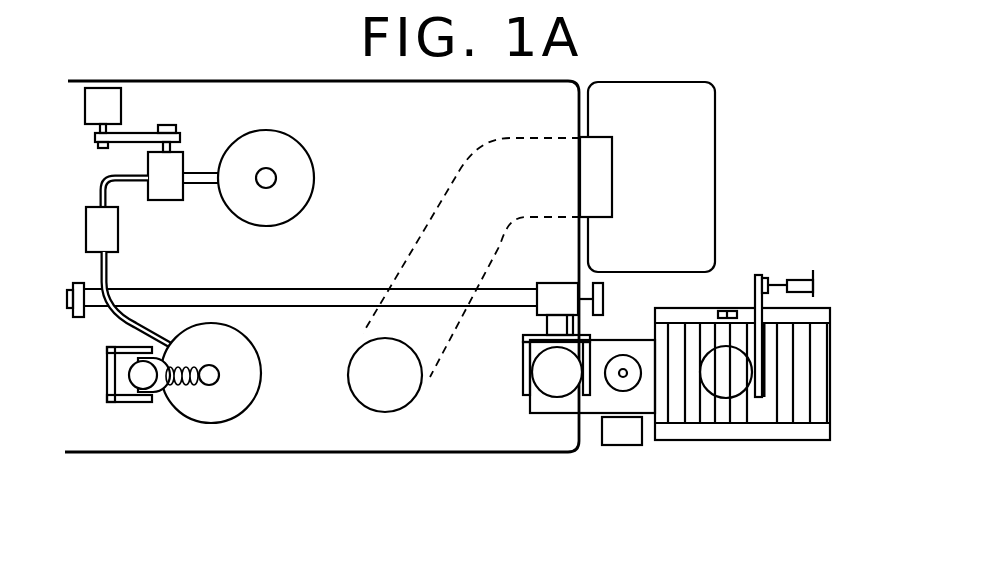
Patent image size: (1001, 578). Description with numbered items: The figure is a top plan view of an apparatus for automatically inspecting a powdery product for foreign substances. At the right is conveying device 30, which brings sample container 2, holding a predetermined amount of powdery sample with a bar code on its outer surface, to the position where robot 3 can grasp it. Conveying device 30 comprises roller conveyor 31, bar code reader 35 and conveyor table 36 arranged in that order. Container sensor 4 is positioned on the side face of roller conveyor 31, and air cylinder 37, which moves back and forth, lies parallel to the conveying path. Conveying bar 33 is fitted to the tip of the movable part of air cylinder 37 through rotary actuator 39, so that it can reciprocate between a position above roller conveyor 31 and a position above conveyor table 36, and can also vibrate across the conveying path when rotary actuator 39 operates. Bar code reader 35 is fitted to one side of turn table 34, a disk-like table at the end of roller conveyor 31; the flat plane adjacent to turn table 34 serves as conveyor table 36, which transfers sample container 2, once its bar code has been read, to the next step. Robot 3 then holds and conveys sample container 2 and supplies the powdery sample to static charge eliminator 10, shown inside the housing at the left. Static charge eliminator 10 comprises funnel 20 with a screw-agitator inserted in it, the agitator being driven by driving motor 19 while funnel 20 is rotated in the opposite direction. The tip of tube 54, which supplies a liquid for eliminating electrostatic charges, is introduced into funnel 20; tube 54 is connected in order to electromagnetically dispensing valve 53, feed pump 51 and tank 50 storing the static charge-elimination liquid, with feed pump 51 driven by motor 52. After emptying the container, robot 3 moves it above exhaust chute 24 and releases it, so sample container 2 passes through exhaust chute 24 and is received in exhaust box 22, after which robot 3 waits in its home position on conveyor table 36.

The static charge eliminator 10 is at (249, 326).
The motor 52 is at (108, 98).
The feed pump 51 is at (178, 163).
The tank 50 is at (290, 147).
The electromagnetically dispensing valve 53 is at (98, 225).
The tube 54 is at (110, 276).
The funnel 20 is at (243, 363).
The driving motor 19 is at (142, 377).
The exhaust chute 24 is at (367, 372).
The robot 3 is at (557, 325).
The sample container 2 is at (547, 372).
The conveyor table 36 is at (543, 405).
The turn table 34 is at (623, 366).
The bar code reader 35 is at (620, 445).
The exhaust box 22 is at (682, 168).
The conveying device 30 is at (690, 455).
The roller conveyor 31 is at (788, 417).
The container sensor 4 is at (725, 312).
The conveying bar 33 is at (755, 283).
The rotary actuator 39 is at (765, 278).
The air cylinder 37 is at (798, 283).